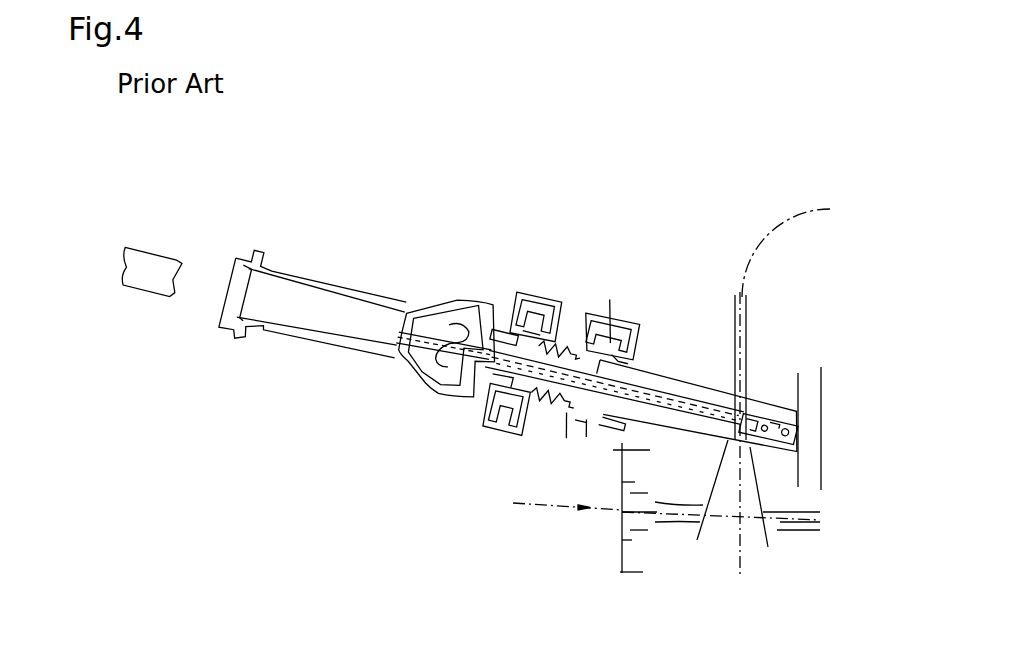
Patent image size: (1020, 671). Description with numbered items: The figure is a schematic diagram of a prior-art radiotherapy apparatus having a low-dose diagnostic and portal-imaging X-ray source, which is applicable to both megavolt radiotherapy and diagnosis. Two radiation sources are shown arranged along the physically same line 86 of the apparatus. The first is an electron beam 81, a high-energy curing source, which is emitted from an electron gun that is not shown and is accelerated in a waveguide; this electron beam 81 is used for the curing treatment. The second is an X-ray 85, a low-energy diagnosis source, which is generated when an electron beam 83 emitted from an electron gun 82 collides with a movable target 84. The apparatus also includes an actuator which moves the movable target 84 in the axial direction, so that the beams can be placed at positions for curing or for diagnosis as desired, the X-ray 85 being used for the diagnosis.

The electron beam 81 is at (758, 246).
The electron gun 82 is at (434, 314).
The electron beam 83 is at (636, 384).
The movable target 84 is at (774, 416).
The X-ray 85 is at (710, 540).
The line 86 is at (738, 562).